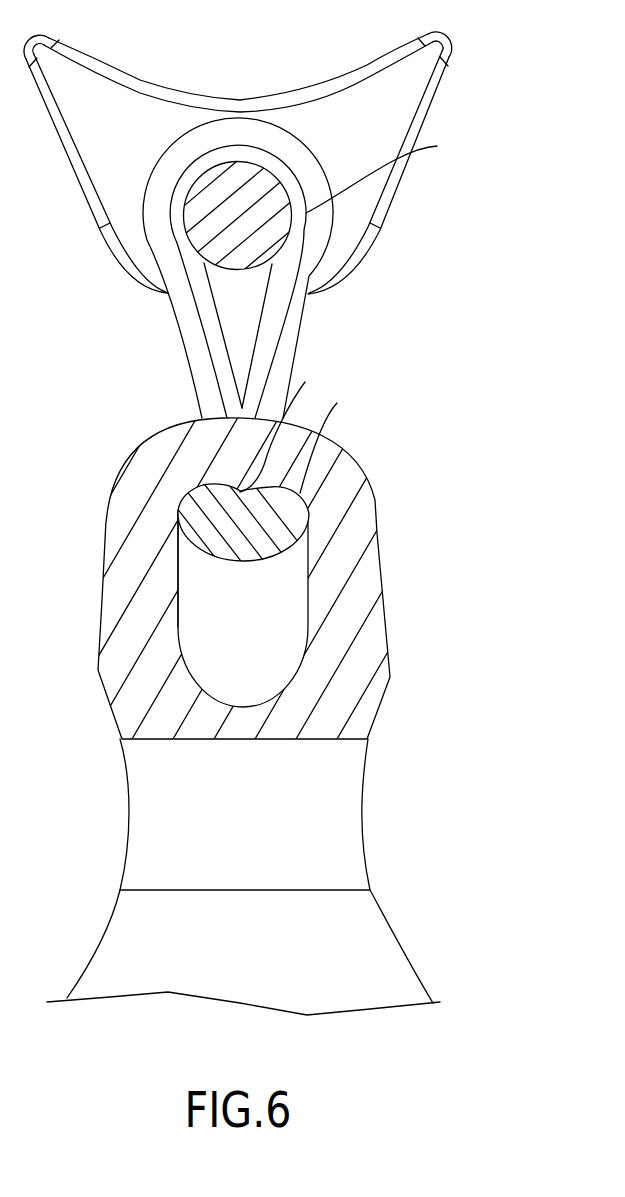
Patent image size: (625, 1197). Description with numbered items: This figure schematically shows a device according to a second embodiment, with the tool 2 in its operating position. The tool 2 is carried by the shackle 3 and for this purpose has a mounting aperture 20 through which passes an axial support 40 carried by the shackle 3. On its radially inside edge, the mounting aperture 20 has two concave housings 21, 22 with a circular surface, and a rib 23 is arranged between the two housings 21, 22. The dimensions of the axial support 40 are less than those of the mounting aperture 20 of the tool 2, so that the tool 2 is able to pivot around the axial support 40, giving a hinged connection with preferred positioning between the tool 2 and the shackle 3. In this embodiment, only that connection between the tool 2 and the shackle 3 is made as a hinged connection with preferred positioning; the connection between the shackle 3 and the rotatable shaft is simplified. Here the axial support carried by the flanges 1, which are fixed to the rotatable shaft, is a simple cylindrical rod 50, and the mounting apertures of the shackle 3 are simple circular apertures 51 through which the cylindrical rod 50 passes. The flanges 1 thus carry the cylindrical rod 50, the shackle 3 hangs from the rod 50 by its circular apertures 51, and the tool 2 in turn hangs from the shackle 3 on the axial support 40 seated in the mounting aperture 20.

The flanges 1 is at (347, 217).
The tool 2 is at (342, 667).
The shackle 3 is at (277, 349).
The mounting aperture 20 is at (290, 602).
The concave housing 21 is at (188, 502).
The concave housing 22 is at (330, 445).
The rib 23 is at (288, 428).
The axial support 40 is at (277, 510).
The cylindrical rod 50 is at (263, 188).
The circular apertures 51 is at (385, 169).